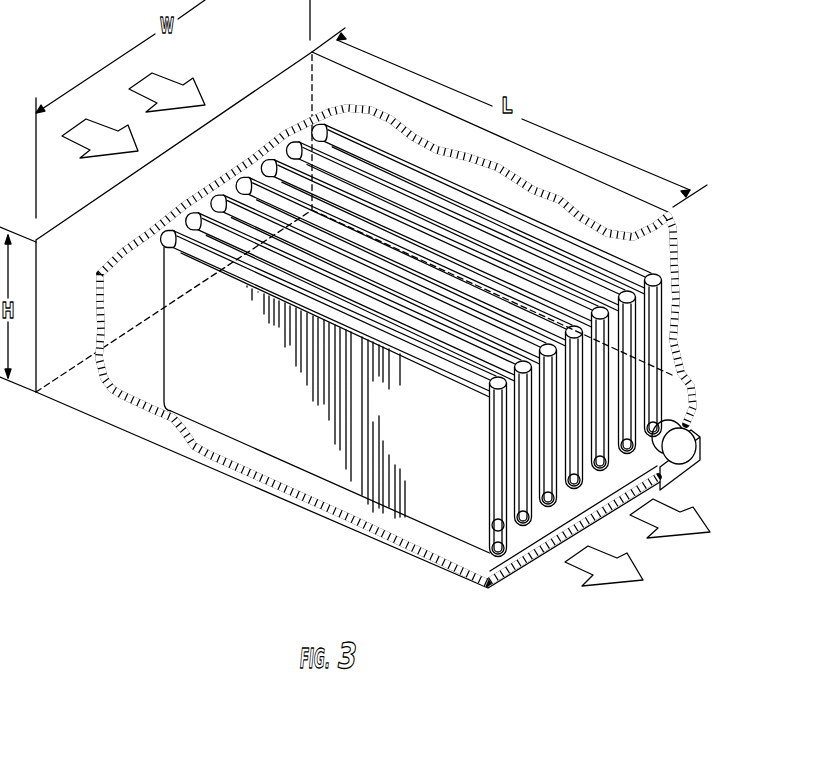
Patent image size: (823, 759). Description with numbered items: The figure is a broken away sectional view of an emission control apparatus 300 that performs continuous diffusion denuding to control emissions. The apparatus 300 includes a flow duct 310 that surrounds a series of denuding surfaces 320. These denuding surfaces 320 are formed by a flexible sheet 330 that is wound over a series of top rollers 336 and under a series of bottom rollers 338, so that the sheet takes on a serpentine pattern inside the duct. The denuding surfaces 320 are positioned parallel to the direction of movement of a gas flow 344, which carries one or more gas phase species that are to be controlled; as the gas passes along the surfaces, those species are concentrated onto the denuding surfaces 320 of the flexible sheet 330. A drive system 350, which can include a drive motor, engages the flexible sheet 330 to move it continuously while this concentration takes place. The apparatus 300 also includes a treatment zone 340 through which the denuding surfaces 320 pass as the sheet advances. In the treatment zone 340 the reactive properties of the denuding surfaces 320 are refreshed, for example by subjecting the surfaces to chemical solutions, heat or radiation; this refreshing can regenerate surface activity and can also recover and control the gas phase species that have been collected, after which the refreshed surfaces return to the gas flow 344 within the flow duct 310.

The emission control apparatus 300 is at (168, 477).
The flow duct 310 is at (110, 427).
The denuding surfaces 320 is at (487, 537).
The flexible sheet 330 is at (448, 392).
The top rollers 336 is at (661, 282).
The bottom rollers 338 is at (524, 521).
The treatment zone 340 is at (668, 484).
The gas flow 344 is at (168, 72).
The drive system 350 is at (689, 436).